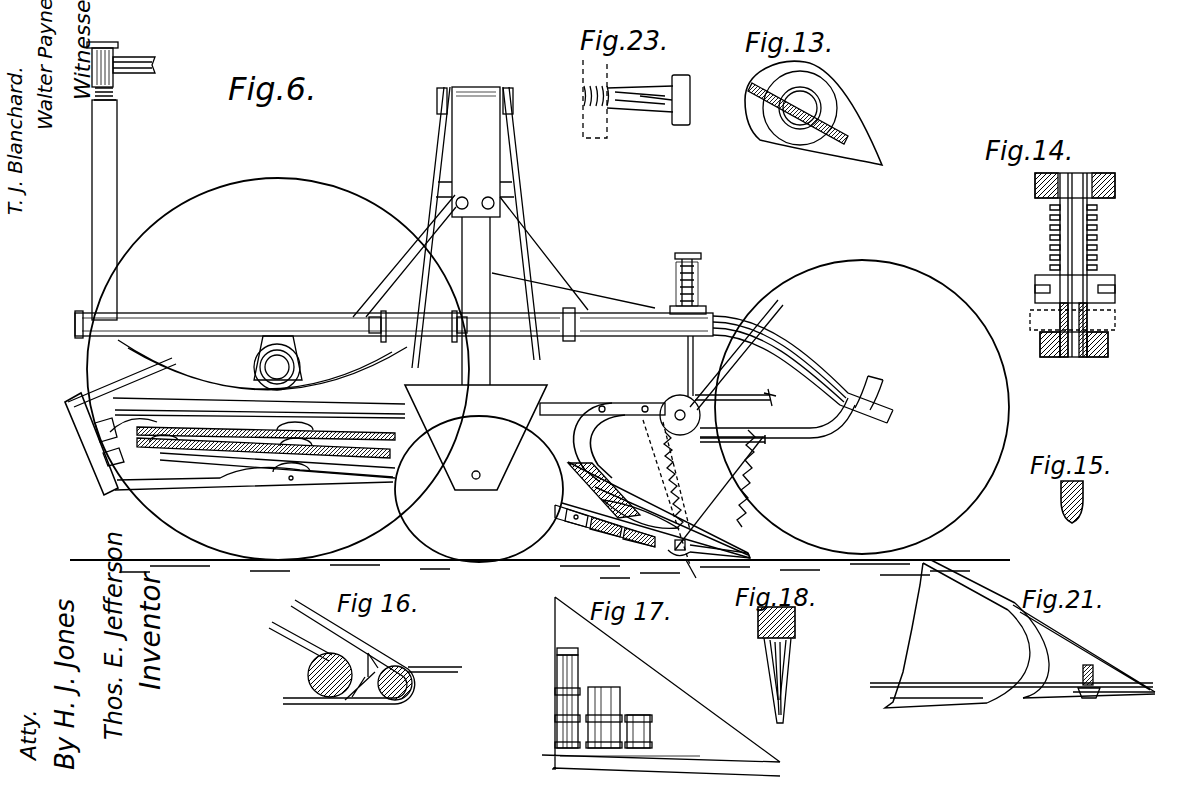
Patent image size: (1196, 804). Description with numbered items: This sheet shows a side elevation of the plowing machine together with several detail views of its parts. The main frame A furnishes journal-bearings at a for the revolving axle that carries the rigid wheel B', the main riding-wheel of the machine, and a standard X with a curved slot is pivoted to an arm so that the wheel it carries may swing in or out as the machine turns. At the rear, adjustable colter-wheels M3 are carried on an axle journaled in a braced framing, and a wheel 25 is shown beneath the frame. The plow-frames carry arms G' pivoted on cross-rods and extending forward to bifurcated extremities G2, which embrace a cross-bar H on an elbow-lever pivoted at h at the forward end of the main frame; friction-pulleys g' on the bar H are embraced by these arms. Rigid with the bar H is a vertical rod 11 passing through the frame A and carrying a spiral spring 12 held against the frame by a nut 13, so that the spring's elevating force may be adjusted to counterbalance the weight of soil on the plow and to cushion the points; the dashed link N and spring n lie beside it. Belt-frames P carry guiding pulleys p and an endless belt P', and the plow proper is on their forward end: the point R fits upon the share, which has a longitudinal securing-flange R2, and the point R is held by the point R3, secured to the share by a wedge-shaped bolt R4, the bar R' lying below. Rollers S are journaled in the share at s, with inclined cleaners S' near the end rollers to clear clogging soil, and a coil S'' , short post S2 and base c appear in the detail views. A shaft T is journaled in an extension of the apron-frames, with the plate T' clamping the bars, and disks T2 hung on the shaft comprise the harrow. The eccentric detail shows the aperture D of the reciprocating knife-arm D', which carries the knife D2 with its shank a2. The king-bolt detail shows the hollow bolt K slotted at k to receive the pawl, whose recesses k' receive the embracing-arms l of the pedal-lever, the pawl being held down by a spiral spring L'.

In FIG. 6, the rigid wheel B' is at (278, 369).
In FIG. 6, the main frame A is at (394, 314).
In FIG. 6, the standard X is at (504, 236).
In FIG. 6, the caster wheel 25 is at (487, 514).
In FIG. 6, the shaft T is at (122, 382).
In FIG. 6, the clamping plate T' is at (92, 444).
In FIG. 6, the disks T2 is at (257, 415).
In FIG. 6, the belt-frames P is at (254, 486).
In FIG. 6, the endless belt P' is at (266, 464).
In FIG. 6, the pulleys p is at (282, 474).
In FIG. 6, the point R is at (656, 480).
In FIG. 21, the point R is at (1012, 634).
In FIG. 6, the plow bar R' is at (605, 526).
In FIG. 6, the longitudinal securing-flange R2 is at (662, 545).
In FIG. 6, the point R3 is at (725, 545).
In FIG. 21, the point R3 is at (1115, 671).
In FIG. 6, the wedge-shaped bolt R4 is at (700, 575).
In FIG. 21, the wedge-shaped bolt R4 is at (1092, 700).
In FIG. 6, the dashed link N is at (670, 492).
In FIG. 6, the spring n is at (738, 478).
In FIG. 6, the friction-pulleys g' is at (674, 479).
In FIG. 6, the bifurcated extremities G2 is at (719, 493).
In FIG. 6, the cross-bar H is at (766, 440).
In FIG. 6, the pivot h is at (866, 402).
In FIG. 6, the journal-bearings a is at (769, 391).
In FIG. 6, the colter-wheels M3 is at (862, 407).
In FIG. 6, the vertical rod 11 is at (698, 278).
In FIG. 6, the spiral spring 12 is at (678, 283).
In FIG. 6, the nut 13 is at (690, 246).
In FIG. 6, the embracing-arms l is at (672, 308).
In FIG. 14, the embracing-arms l is at (1040, 290).
In FIG. 13, the aperture D is at (798, 113).
In FIG. 13, the reciprocating knife-arm D' is at (832, 108).
In FIG. 14, the hollow bolt K is at (1060, 200).
In FIG. 14, the slot k is at (1073, 265).
In FIG. 14, the recesses k' is at (1080, 284).
In FIG. 14, the spiral spring L' is at (1092, 237).
In FIG. 16, the rollers S is at (420, 690).
In FIG. 17, the rollers S is at (587, 701).
In FIG. 16, the inclined cleaners S' is at (370, 690).
In FIG. 17, the inclined cleaners S' is at (552, 709).
In FIG. 16, the coil S'' is at (317, 675).
In FIG. 17, the journals s is at (555, 643).
In FIG. 17, the short post S2 is at (652, 731).
In FIG. 17, the base c is at (630, 762).
In FIG. 18, the arms G' is at (796, 622).
In FIG. 18, the shank a2 is at (786, 648).
In FIG. 18, the knife D2 is at (790, 670).